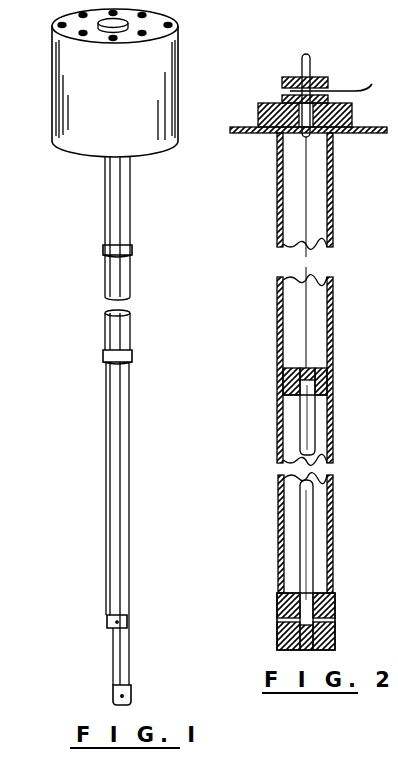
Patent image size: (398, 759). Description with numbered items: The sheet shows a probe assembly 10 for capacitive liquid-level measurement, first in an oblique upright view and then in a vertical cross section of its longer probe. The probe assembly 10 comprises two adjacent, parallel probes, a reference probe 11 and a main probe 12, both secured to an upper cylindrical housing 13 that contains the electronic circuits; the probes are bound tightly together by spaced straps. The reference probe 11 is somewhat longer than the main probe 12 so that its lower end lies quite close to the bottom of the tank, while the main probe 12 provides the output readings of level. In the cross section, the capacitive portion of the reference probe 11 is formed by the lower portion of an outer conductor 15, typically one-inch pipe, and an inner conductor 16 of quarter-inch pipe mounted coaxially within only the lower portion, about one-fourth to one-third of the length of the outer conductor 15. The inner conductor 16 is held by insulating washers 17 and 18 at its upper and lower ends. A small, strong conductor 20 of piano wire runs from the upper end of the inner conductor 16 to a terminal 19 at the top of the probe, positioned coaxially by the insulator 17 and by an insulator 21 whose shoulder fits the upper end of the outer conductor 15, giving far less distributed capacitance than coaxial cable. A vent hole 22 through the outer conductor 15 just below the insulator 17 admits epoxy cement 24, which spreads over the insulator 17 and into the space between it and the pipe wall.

In FIG. 1, the probe assembly 10 is at (87, 194).
In FIG. 1, the reference probe 11 is at (132, 331).
In FIG. 2, the reference probe 11 is at (266, 337).
In FIG. 1, the main probe 12 is at (110, 338).
In FIG. 1, the upper cylindrical housing 13 is at (60, 102).
In FIG. 2, the outer conductor 15 is at (333, 510).
In FIG. 2, the inner conductor 16 is at (313, 568).
In FIG. 2, the upper insulating washer 17 is at (283, 394).
In FIG. 1, the lower insulating washer 18 is at (131, 691).
In FIG. 2, the lower insulating washer 18 is at (335, 633).
In FIG. 2, the terminal 19 is at (372, 90).
In FIG. 2, the conductor (piano wire) 20 is at (312, 222).
In FIG. 2, the insulator 21 is at (353, 112).
In FIG. 2, the vent hole 22 is at (333, 400).
In FIG. 2, the epoxy cement 24 is at (322, 368).